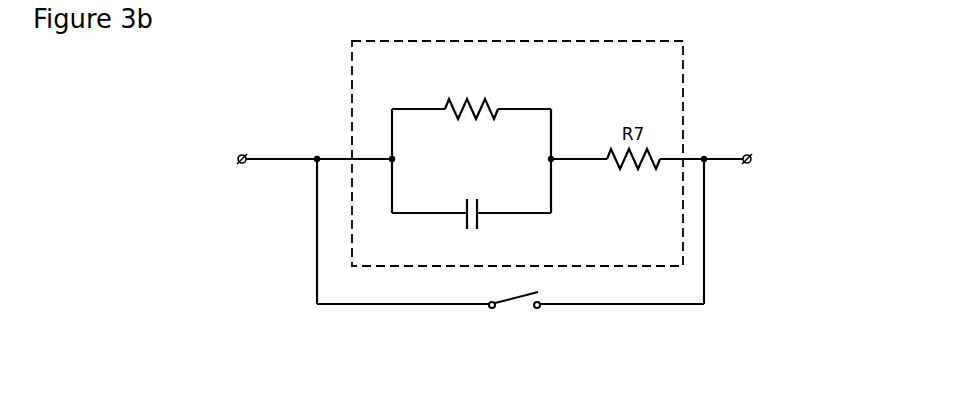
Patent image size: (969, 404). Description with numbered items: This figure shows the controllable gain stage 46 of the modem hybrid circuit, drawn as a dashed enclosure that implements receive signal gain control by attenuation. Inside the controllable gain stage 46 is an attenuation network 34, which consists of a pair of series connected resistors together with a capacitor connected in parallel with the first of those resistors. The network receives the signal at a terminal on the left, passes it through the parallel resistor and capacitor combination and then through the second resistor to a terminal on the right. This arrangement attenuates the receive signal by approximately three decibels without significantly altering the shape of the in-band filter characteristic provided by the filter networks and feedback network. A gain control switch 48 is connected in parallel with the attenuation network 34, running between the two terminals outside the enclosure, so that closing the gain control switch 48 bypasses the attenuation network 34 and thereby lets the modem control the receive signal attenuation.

The attenuation network 34 is at (552, 100).
The controllable gain stage 46 is at (643, 41).
The gain control switch 48 is at (525, 323).